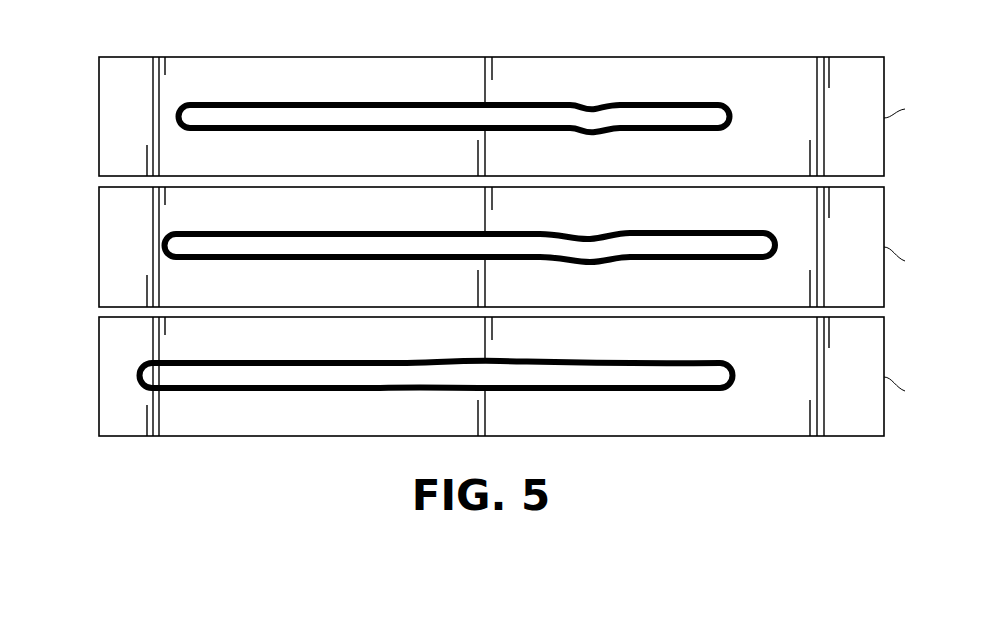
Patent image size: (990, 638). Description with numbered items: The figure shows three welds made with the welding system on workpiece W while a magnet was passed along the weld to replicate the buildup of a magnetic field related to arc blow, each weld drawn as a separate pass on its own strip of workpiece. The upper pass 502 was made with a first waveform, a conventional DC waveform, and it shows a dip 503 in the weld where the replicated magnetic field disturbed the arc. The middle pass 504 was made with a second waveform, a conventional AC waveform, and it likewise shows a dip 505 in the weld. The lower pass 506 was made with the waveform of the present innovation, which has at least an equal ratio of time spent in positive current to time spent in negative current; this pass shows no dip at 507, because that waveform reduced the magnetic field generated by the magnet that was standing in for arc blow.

The pass 502 is at (886, 79).
The dip 503 is at (594, 86).
The pass 504 is at (886, 219).
The dip 505 is at (598, 223).
The pass 506 is at (886, 349).
The no dip location 507 is at (598, 353).